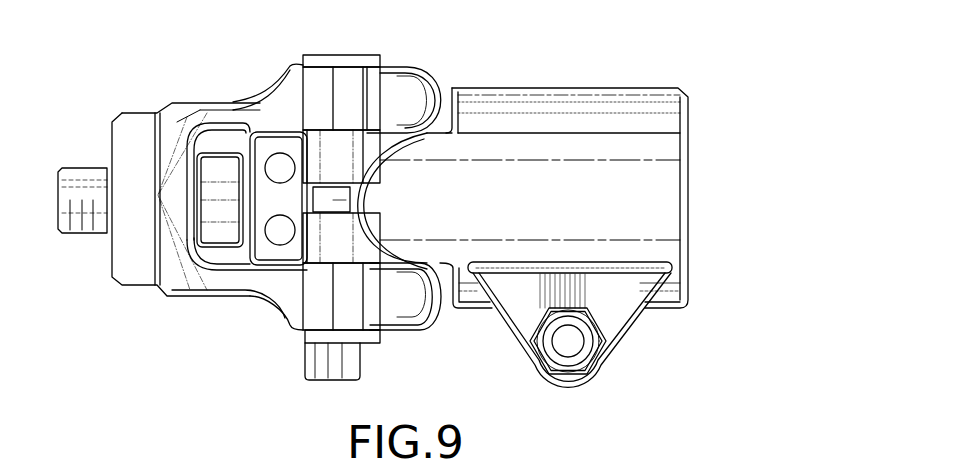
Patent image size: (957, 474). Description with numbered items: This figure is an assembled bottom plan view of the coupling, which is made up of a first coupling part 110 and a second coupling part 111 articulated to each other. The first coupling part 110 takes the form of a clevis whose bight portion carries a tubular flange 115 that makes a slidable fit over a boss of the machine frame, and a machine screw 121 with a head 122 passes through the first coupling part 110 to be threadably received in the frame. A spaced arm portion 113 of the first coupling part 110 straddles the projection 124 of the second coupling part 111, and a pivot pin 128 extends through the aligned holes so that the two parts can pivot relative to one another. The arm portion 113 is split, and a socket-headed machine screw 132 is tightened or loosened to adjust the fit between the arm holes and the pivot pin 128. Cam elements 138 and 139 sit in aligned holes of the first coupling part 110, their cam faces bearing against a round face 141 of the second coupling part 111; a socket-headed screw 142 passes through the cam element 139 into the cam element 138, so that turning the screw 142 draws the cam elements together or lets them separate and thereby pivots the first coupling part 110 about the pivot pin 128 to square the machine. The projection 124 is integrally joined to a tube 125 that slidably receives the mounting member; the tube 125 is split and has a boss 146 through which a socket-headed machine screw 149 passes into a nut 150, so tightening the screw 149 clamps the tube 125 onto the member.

The first coupling part 110 is at (207, 302).
The second coupling part 111 is at (641, 89).
The arm portion 113 is at (237, 297).
The tubular flange 115 is at (141, 130).
The machine screw 121 is at (87, 190).
The head 122 is at (222, 163).
The projection 124 is at (268, 196).
The tube 125 is at (653, 146).
The pivot pin 128 is at (383, 58).
The socket-headed machine screw 132 is at (282, 165).
The cam element 138 is at (345, 148).
The cam element 139 is at (340, 227).
The round face 141 is at (377, 240).
The socket-headed screw 142 is at (328, 383).
The boss 146 is at (615, 317).
The socket-headed machine screw 149 is at (576, 341).
The nut 150 is at (576, 372).